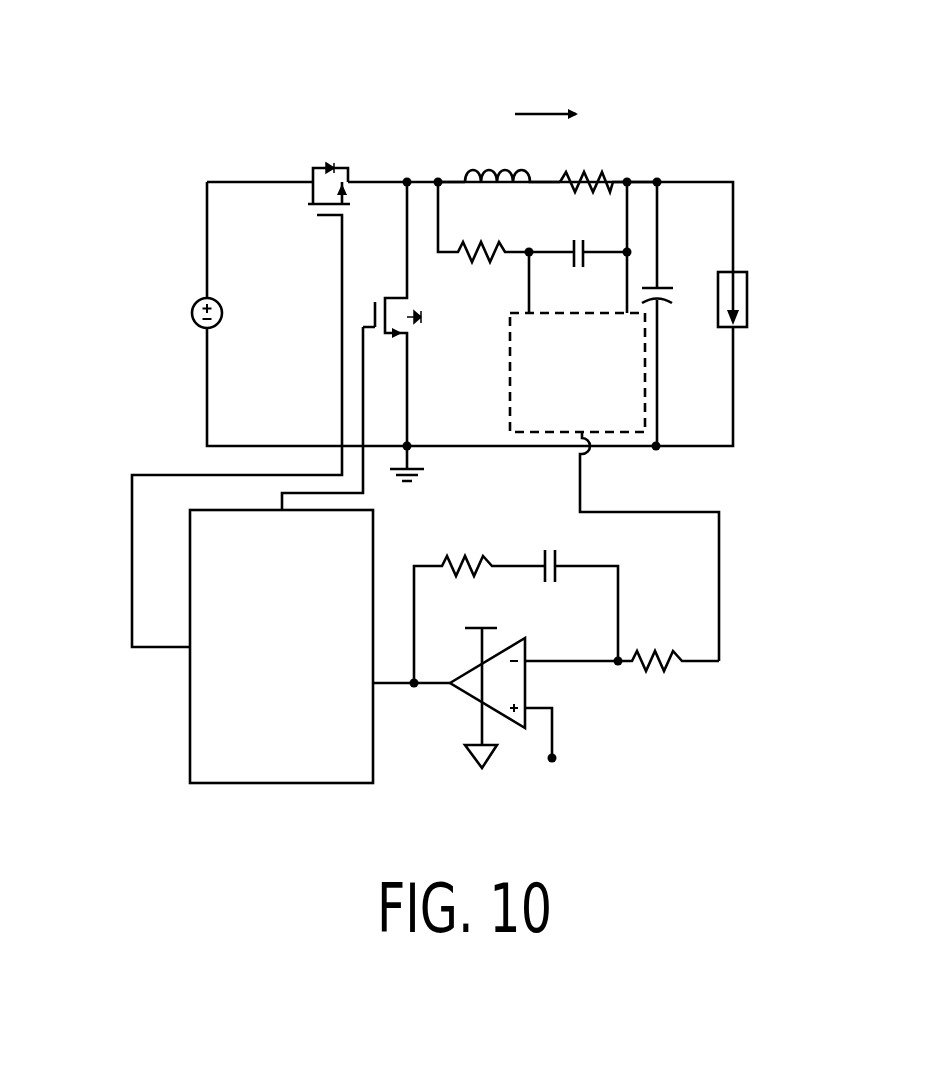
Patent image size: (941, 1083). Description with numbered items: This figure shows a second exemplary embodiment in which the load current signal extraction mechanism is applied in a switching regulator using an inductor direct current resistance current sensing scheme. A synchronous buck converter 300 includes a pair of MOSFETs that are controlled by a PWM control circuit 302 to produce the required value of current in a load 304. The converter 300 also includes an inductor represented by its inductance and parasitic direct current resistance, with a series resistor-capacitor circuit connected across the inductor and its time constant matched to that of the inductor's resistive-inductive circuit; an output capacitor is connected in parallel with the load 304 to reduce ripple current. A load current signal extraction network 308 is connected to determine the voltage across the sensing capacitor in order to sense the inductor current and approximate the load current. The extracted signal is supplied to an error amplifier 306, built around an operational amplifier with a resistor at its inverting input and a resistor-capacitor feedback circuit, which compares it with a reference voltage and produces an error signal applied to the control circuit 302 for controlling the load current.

The synchronous buck converter 300 is at (645, 113).
The PWM control circuit 302 is at (302, 703).
The load 304 is at (742, 270).
The error amplifier 306 is at (603, 708).
The load current signal extraction network 308 is at (628, 373).